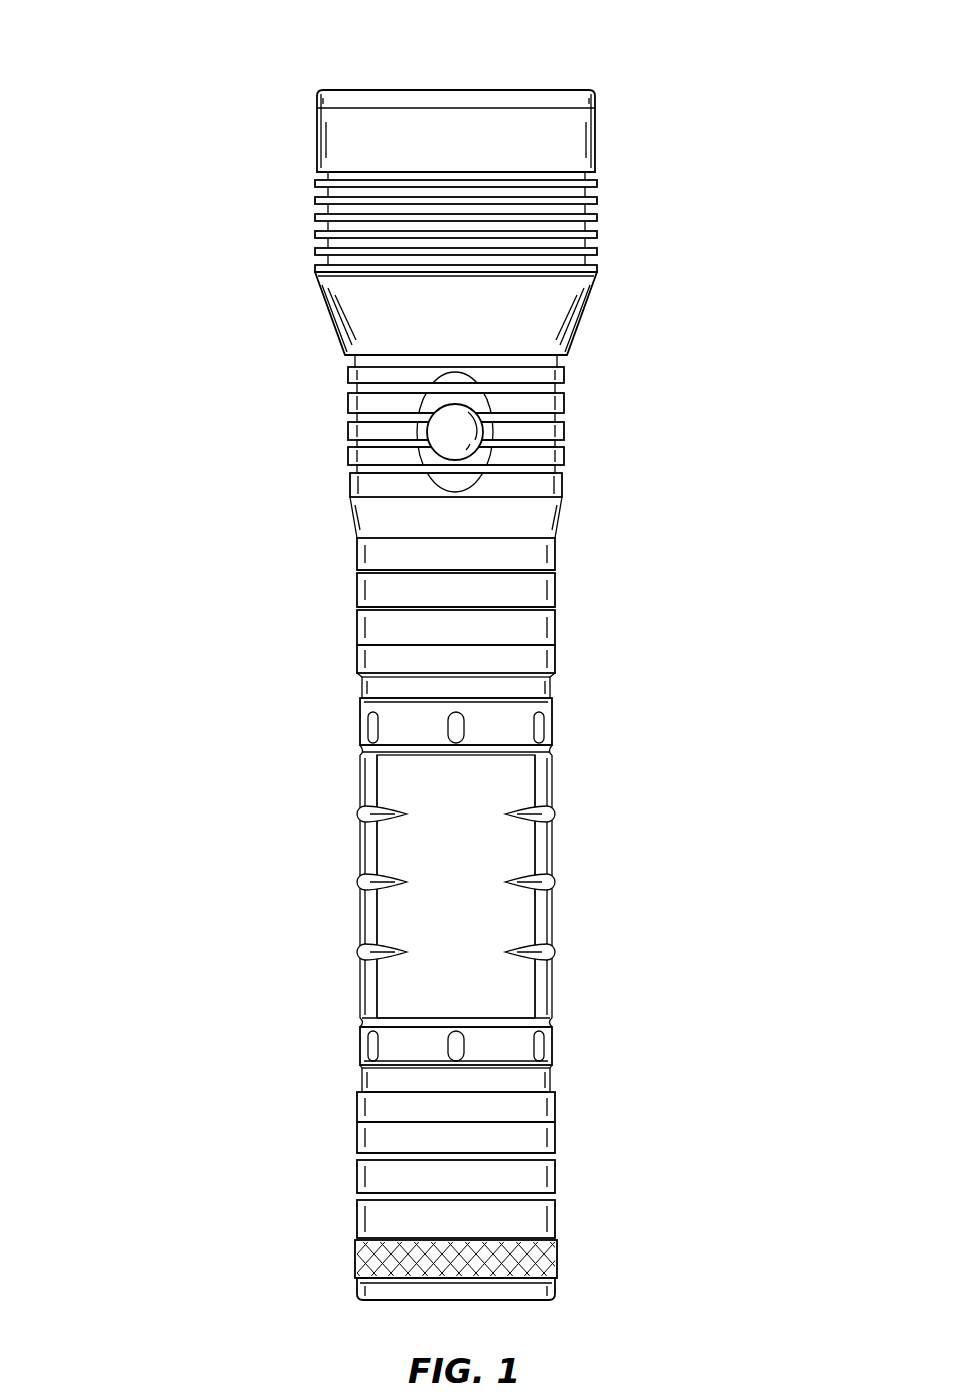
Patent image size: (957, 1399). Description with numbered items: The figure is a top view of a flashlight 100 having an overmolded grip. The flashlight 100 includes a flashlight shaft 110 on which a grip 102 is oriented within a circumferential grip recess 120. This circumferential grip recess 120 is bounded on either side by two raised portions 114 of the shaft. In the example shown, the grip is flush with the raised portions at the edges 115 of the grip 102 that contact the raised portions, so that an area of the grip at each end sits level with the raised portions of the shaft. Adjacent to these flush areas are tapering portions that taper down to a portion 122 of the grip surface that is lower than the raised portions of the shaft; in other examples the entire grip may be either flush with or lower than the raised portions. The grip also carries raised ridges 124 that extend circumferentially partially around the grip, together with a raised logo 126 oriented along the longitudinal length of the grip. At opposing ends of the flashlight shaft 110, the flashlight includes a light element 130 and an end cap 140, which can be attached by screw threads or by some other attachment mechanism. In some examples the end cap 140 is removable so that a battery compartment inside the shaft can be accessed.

The flashlight 100 is at (417, 655).
The grip 102 is at (573, 963).
The flashlight shaft 110 is at (556, 887).
The raised portions 114 is at (520, 627).
The edges of the grip 115 is at (515, 881).
The circumferential grip recess 120 is at (412, 885).
The lower portion of the grip surface 122 is at (392, 688).
The raised ridges 124 is at (553, 812).
The raised logo 126 is at (440, 980).
The light element 130 is at (543, 313).
The end cap 140 is at (553, 1257).